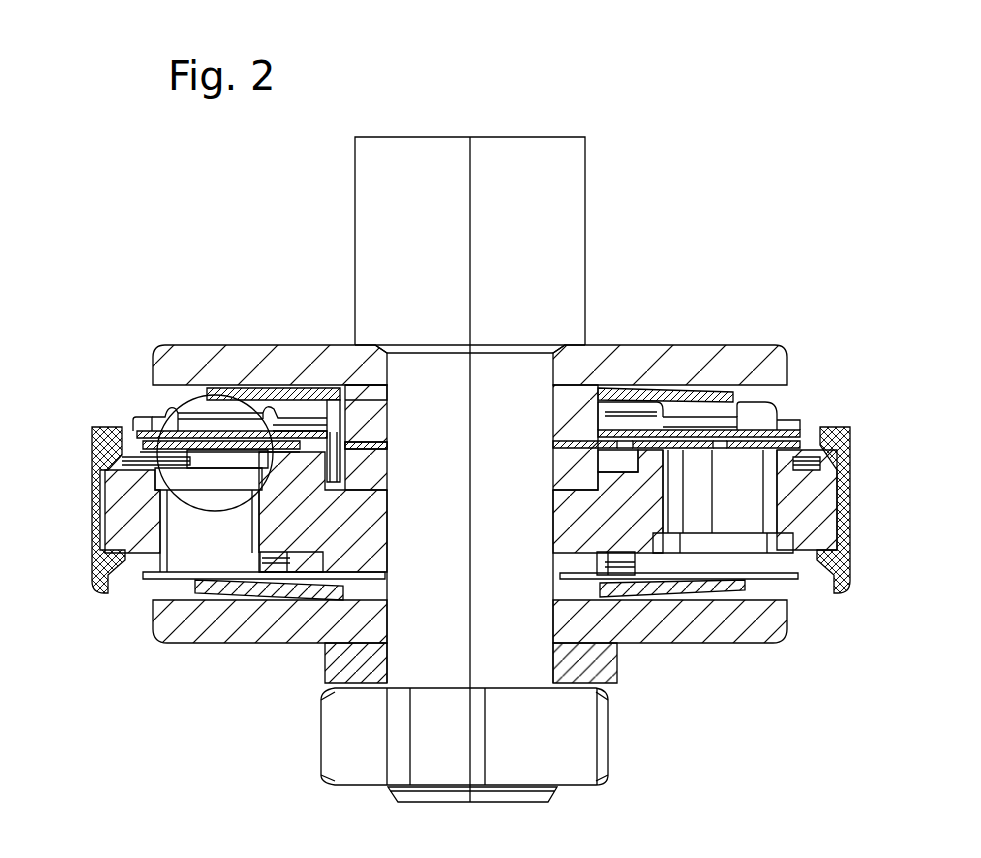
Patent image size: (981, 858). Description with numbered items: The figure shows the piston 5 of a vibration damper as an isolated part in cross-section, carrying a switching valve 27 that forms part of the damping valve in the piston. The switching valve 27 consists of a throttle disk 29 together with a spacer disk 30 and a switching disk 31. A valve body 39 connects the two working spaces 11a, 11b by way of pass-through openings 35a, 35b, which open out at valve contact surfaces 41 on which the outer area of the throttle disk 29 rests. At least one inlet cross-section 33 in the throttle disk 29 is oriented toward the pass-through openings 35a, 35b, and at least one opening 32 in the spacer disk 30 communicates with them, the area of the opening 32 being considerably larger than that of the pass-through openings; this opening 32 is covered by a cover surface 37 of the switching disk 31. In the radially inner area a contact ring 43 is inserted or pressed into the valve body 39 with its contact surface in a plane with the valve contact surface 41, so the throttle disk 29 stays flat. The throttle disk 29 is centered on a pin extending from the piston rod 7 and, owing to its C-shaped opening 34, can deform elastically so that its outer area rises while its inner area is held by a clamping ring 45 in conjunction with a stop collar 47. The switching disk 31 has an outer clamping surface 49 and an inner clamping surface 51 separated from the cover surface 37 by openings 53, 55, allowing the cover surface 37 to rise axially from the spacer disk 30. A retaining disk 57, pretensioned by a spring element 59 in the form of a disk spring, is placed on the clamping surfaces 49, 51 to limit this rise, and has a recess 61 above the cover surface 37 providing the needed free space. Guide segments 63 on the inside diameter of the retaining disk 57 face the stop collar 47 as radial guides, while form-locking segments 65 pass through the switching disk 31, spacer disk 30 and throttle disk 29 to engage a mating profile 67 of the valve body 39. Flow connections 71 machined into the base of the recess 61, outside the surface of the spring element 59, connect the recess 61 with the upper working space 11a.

The piston 5 is at (110, 740).
The piston rod 7 is at (577, 232).
The upper working space 11a is at (723, 192).
The lower working space 11b is at (700, 793).
The switching valve 27 is at (178, 503).
The throttle disk 29 is at (795, 468).
The spacer disk 30 is at (793, 443).
The switching disk 31 is at (753, 436).
The opening 32 is at (742, 444).
The inlet cross-section 33 is at (716, 452).
The C-shaped opening 34 is at (614, 466).
The pass-through opening 35a is at (733, 536).
The pass-through opening 35b is at (214, 558).
The cover surface 37 is at (764, 412).
The valve body 39 is at (799, 547).
The valve contact surface 41 is at (661, 462).
The contact ring 43 is at (378, 470).
The clamping ring 45 is at (366, 408).
The stop collar 47 is at (657, 356).
The outer clamping surface 49 is at (146, 426).
The inner clamping surface 51 is at (303, 426).
The opening 53 is at (179, 426).
The opening 55 is at (261, 426).
The retaining disk 57 is at (761, 390).
The spring element 59 is at (699, 394).
The recess 61 is at (725, 426).
The guide segments 63 is at (603, 410).
The form-locking segments 65 is at (337, 424).
The mating profile 67 is at (327, 487).
The flow connections 71 is at (758, 404).